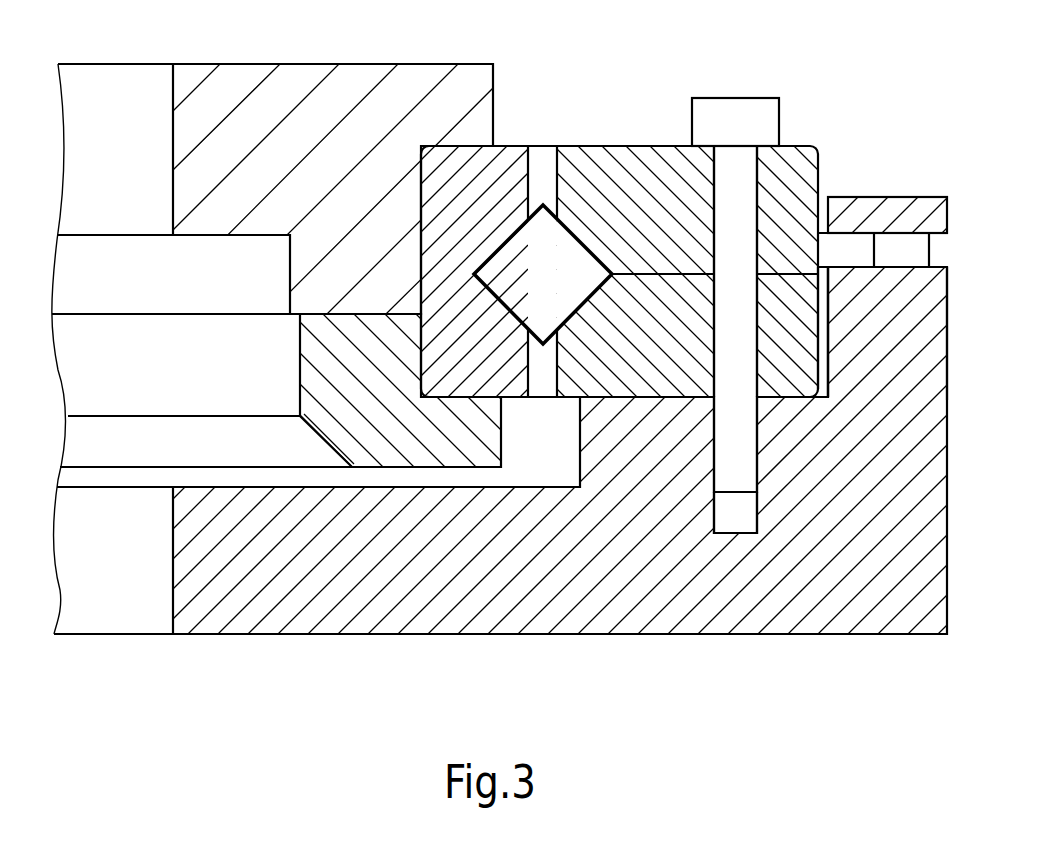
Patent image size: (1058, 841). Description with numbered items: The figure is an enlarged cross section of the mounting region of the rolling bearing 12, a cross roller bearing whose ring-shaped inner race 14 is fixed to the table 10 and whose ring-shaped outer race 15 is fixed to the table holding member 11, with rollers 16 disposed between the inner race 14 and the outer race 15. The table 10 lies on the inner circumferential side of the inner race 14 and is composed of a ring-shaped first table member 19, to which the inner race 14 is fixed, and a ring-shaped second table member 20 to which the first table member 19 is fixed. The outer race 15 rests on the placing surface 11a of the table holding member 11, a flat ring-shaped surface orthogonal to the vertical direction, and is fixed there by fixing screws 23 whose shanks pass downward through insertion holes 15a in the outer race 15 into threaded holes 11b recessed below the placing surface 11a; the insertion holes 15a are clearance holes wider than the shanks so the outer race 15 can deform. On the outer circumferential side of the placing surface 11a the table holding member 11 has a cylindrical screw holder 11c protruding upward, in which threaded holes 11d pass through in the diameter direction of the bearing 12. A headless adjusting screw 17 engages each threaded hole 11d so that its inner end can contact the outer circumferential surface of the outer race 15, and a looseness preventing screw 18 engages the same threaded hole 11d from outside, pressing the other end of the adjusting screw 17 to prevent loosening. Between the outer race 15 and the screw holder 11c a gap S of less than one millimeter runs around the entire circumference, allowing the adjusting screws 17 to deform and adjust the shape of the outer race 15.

The table 10 is at (333, 157).
The second table member 20 is at (300, 64).
The table holding member 11 is at (530, 636).
The placing surface 11a is at (637, 397).
The threaded hole 11b is at (714, 516).
The screw holder 11c is at (853, 197).
The threaded hole 11d is at (909, 231).
The rolling bearing 12 is at (673, 239).
The inner race 14 is at (513, 146).
The outer race 15 is at (632, 146).
The insertion hole 15a is at (714, 305).
The roller 16 is at (584, 245).
The adjusting screw 17 is at (853, 267).
The looseness preventing screw 18 is at (898, 268).
The first table member 19 is at (502, 445).
The fixing screw 23 is at (733, 98).
The gap S is at (823, 363).